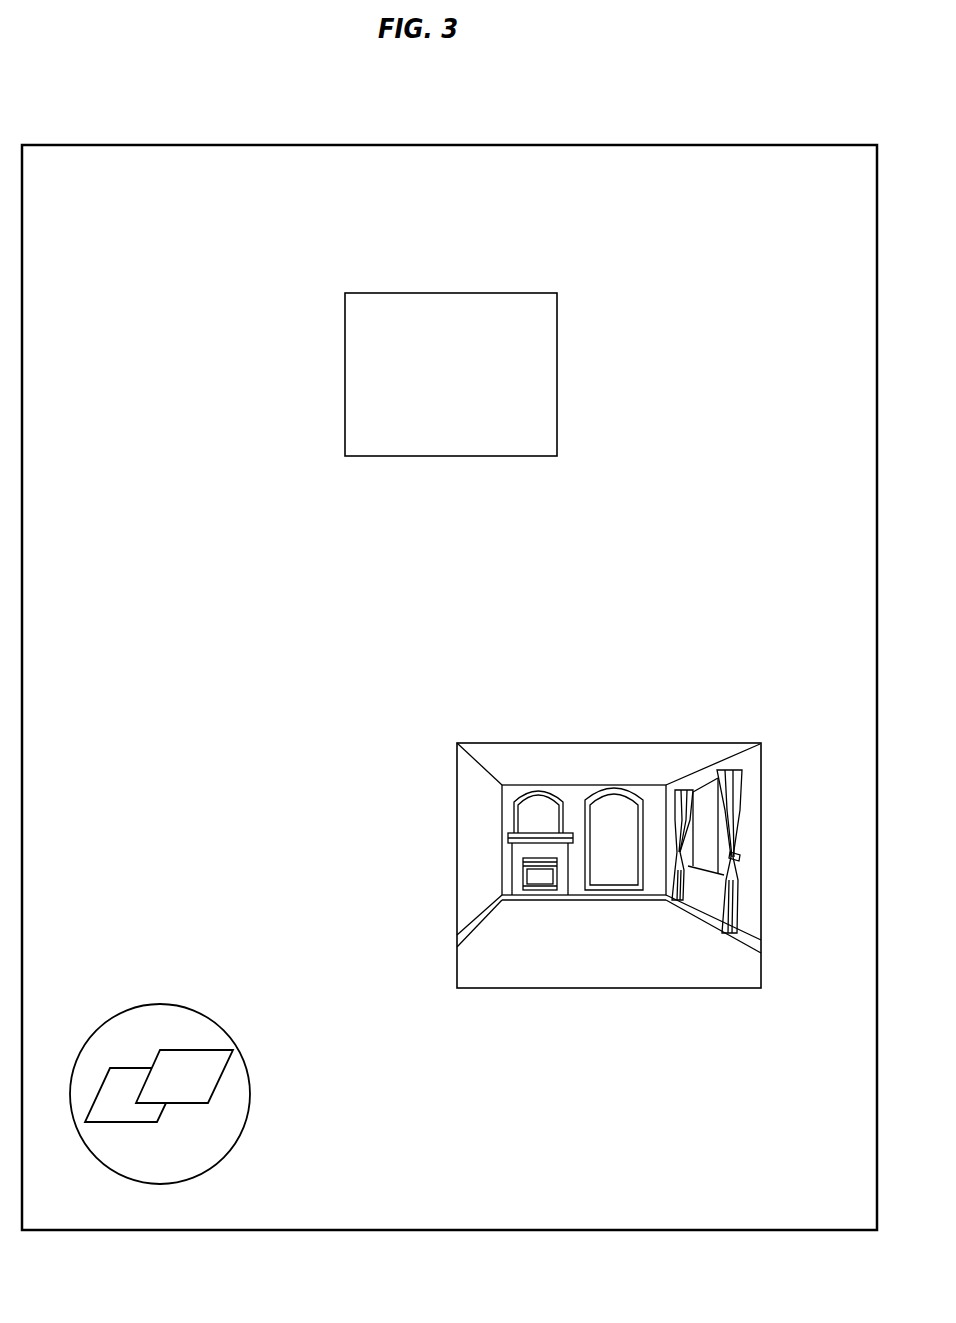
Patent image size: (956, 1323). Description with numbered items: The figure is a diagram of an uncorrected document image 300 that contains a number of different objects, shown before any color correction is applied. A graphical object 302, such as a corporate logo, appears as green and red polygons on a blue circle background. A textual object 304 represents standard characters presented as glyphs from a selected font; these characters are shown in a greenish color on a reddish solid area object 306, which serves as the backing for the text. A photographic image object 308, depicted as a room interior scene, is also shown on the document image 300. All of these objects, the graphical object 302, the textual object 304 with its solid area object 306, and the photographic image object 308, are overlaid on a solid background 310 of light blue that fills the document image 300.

The uncorrected document image 300 is at (750, 135).
The graphical object 302 is at (162, 991).
The textual object 304 is at (374, 302).
The solid area object 306 is at (507, 278).
The photographic image object 308 is at (497, 731).
The solid background 310 is at (193, 153).